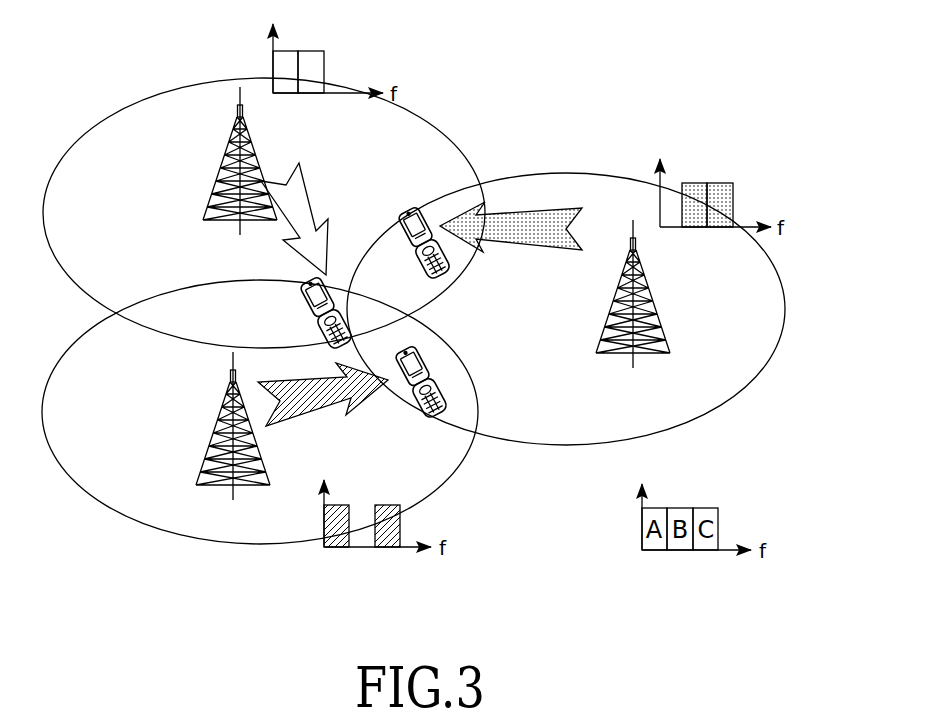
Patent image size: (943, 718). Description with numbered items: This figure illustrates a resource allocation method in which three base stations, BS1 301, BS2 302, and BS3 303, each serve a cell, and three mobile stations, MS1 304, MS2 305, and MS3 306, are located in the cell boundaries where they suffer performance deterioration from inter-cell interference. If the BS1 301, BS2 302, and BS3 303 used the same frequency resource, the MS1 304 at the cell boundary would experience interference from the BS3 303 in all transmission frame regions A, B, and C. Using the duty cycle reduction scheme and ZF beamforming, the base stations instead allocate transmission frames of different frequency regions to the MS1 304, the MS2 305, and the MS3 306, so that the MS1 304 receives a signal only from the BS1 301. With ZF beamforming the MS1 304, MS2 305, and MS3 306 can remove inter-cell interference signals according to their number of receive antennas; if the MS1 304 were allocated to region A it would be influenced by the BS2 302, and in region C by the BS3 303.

The BS1 301 is at (206, 414).
The BS2 302 is at (207, 174).
The BS3 303 is at (677, 276).
The MS1 304 is at (462, 409).
The MS2 305 is at (291, 274).
The MS3 306 is at (421, 199).